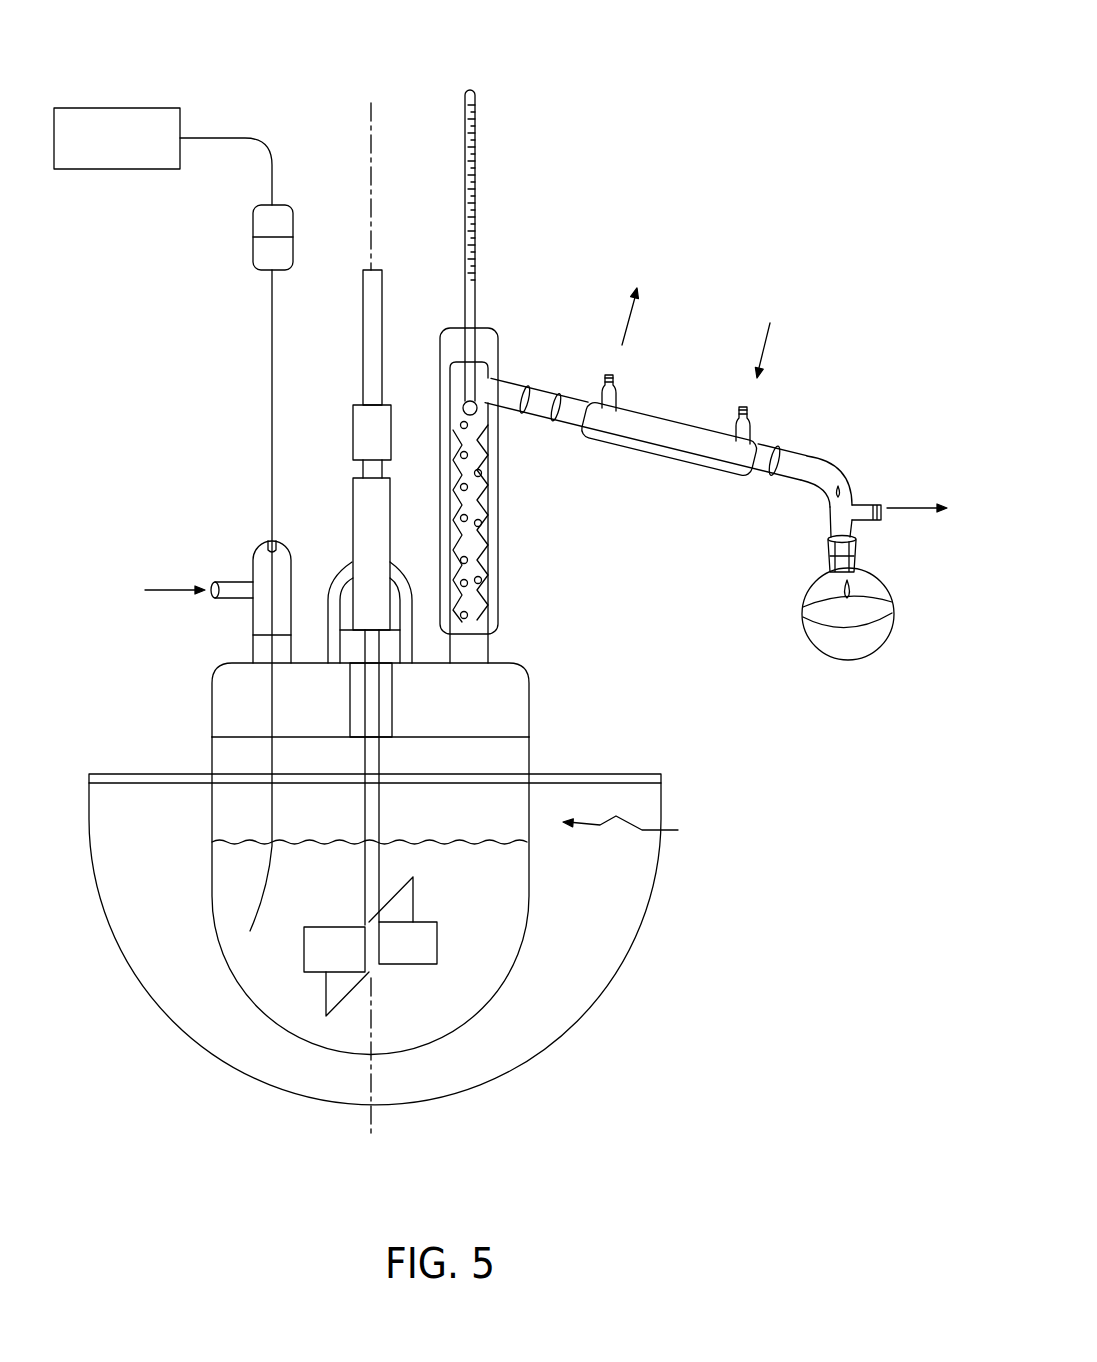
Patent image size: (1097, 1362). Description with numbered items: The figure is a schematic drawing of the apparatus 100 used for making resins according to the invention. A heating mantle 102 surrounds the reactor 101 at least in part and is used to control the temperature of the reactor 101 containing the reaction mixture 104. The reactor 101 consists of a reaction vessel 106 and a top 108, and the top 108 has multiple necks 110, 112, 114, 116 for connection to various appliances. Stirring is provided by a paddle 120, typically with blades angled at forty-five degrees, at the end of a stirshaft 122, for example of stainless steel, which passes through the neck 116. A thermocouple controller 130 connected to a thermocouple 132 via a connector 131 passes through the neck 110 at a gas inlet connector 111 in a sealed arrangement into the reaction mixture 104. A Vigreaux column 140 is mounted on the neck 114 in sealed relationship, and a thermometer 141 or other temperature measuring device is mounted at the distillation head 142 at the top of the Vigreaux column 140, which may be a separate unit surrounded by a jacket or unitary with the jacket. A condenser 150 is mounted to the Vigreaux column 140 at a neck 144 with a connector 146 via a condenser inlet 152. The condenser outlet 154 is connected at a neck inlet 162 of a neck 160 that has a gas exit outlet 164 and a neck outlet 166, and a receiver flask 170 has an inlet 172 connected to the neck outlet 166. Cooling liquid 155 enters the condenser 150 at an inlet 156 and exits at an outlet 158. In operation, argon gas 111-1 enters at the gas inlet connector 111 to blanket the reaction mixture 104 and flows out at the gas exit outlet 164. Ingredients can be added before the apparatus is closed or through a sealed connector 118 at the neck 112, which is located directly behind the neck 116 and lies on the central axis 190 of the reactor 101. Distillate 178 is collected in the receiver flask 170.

The apparatus 100 is at (676, 103).
The reactor 101 is at (641, 826).
The heating mantle 102 is at (622, 930).
The reaction mixture 104 is at (500, 882).
The reaction vessel 106 is at (531, 755).
The top 108 is at (531, 695).
The neck 110 is at (253, 656).
The gas inlet connector 111 is at (230, 580).
The argon gas 111-1 is at (164, 562).
The neck 112 is at (408, 582).
The neck 114 is at (492, 642).
The neck 116 is at (378, 648).
The sealed connector 118 is at (345, 582).
The paddle 120 is at (441, 945).
The stirshaft 122 is at (363, 316).
The thermocouple controller 130 is at (140, 152).
The connector 131 is at (253, 222).
The thermocouple 132 is at (272, 300).
The Vigreaux column 140 is at (478, 552).
The thermometer 141 is at (478, 140).
The distillation head 142 is at (488, 335).
The neck 144 is at (530, 390).
The connector 146 is at (556, 393).
The condenser 150 is at (668, 478).
The condenser inlet 152 is at (572, 428).
The condenser outlet 154 is at (777, 458).
The cooling liquid 155 is at (628, 318).
The inlet 156 is at (748, 408).
The outlet 158 is at (618, 372).
The neck 160 is at (818, 495).
The neck inlet 162 is at (818, 462).
The gas exit outlet 164 is at (878, 503).
The neck outlet 166 is at (828, 543).
The receiver flask 170 is at (850, 660).
The inlet 172 is at (858, 557).
The distillate 178 is at (828, 616).
The central axis 190 is at (368, 113).